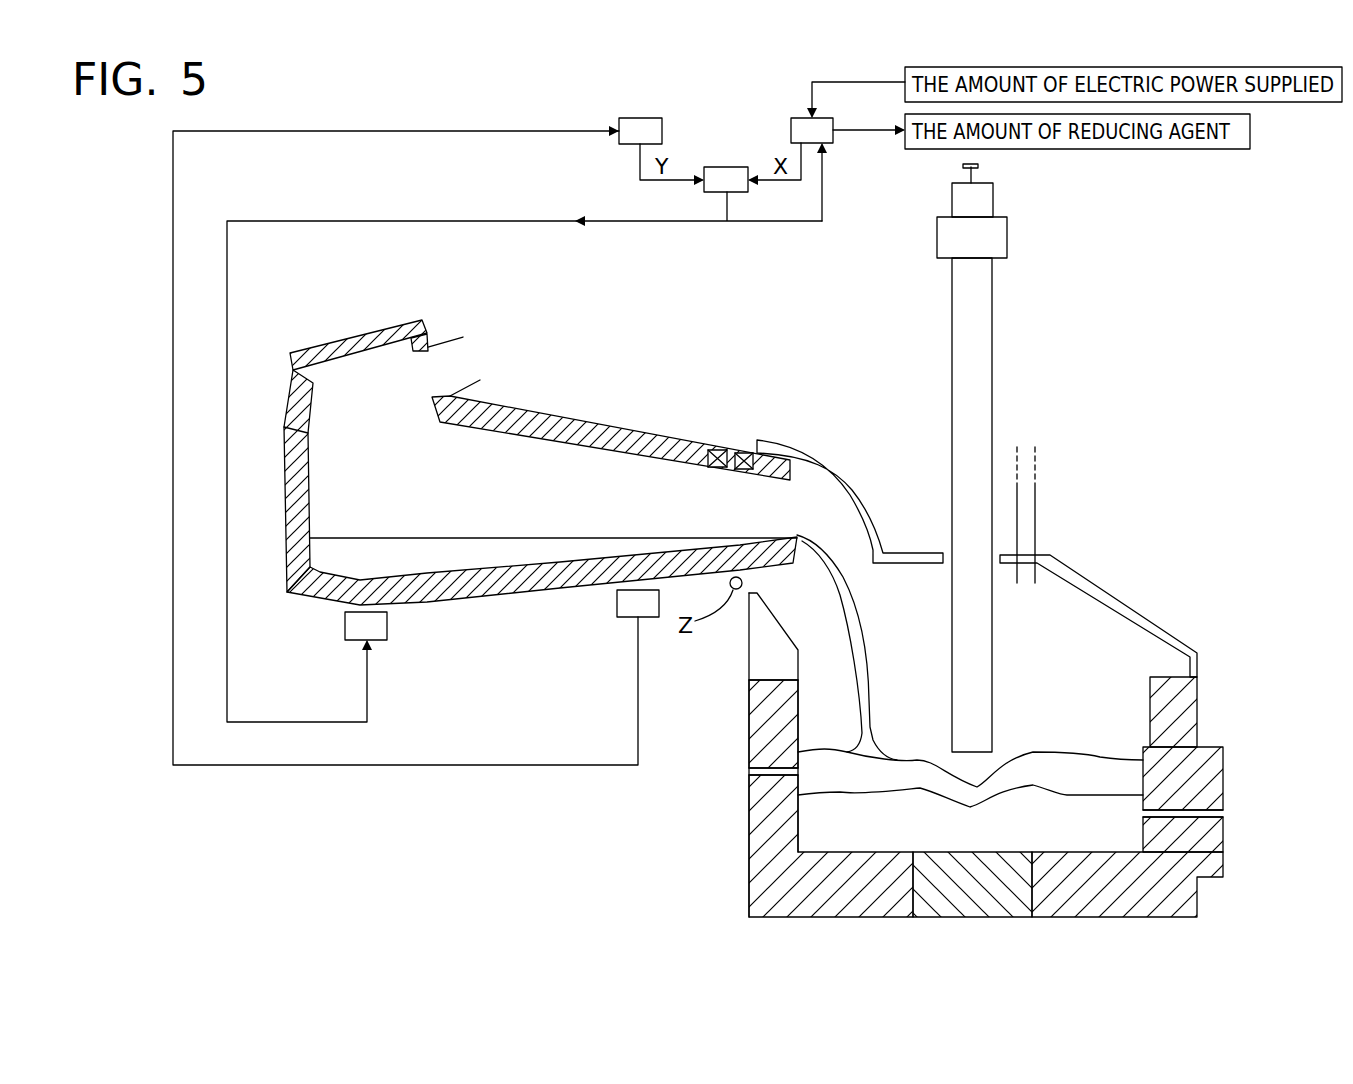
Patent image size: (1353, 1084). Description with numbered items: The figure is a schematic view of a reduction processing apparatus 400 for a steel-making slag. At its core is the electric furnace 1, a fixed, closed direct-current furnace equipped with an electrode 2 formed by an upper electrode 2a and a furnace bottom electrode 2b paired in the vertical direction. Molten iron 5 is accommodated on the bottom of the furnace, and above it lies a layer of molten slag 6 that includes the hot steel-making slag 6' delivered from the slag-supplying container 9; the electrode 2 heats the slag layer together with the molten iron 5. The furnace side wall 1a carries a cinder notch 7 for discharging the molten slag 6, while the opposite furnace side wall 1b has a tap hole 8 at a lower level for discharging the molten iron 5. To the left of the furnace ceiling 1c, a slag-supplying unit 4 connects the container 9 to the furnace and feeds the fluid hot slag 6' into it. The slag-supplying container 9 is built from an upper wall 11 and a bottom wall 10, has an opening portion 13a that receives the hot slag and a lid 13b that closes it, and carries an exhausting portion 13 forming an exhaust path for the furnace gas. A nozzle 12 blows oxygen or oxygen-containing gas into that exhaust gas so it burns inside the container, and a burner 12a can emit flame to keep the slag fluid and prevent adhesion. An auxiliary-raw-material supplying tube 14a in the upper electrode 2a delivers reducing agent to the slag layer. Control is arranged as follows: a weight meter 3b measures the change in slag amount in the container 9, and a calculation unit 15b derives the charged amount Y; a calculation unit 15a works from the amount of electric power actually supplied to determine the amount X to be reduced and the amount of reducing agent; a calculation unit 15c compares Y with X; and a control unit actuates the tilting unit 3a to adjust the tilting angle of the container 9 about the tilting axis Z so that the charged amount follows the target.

The electric furnace 1 is at (1107, 577).
The furnace side wall 1a is at (757, 785).
The furnace side wall 1b is at (1213, 765).
The furnace ceiling 1c is at (1143, 620).
The electrode 2 is at (1015, 458).
The upper electrode 2a is at (978, 312).
The furnace bottom electrode 2b is at (988, 917).
The tilting unit 3a is at (388, 626).
The weight meter 3b is at (617, 605).
The slag-supplying unit 4 is at (822, 502).
The molten iron 5 is at (838, 827).
The molten slag 6 is at (922, 737).
The hot steel-making slag 6' is at (671, 647).
The cinder notch 7 is at (755, 772).
The tap hole 8 is at (1222, 813).
The slag-supplying container 9 is at (561, 361).
The bottom wall 10 is at (325, 587).
The upper wall 11 is at (578, 432).
The nozzle 12 is at (741, 455).
The burner 12a is at (715, 450).
The exhausting portion 13 is at (410, 414).
The opening portion 13a is at (375, 322).
The lid 13b is at (326, 347).
The auxiliary-raw-material supplying tube 14a is at (1027, 512).
The calculation unit 15a is at (798, 132).
The calculation unit 15b is at (640, 128).
The calculation unit 15c is at (727, 177).
The reduction processing apparatus 400 is at (1290, 916).